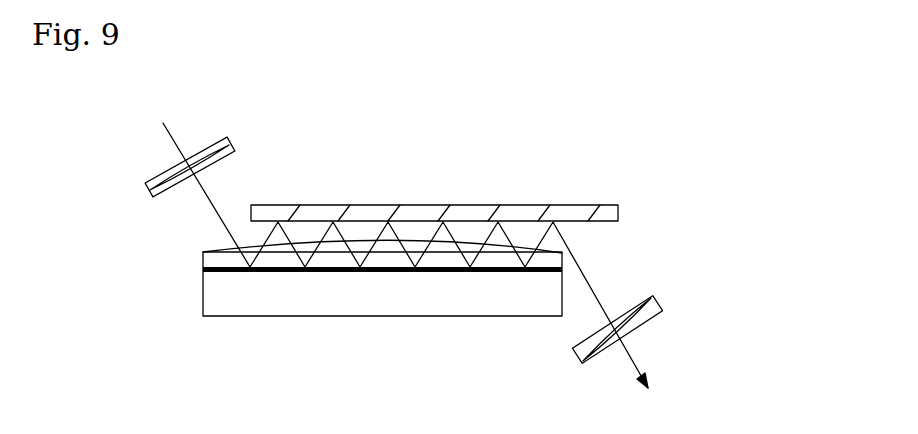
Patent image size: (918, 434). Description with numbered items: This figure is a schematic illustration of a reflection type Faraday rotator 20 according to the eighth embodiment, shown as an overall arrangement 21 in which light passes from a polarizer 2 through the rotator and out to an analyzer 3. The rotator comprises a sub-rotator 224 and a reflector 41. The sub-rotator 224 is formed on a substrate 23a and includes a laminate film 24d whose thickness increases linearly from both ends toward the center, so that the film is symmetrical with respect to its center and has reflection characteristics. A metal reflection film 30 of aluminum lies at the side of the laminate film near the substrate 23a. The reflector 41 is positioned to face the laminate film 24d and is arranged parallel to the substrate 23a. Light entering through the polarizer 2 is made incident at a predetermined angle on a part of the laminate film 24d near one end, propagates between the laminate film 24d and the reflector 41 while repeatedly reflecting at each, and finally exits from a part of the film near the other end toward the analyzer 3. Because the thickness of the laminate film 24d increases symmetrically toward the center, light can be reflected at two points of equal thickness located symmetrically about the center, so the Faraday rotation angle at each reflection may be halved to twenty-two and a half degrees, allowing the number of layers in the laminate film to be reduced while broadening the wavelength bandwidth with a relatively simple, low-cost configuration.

The polarizer 2 is at (128, 184).
The analyzer 3 is at (681, 320).
The reflection type Faraday rotator 20 is at (550, 181).
The liquid crystal display device 21 is at (648, 170).
The substrate 23a is at (222, 300).
The laminate film 24d is at (196, 222).
The metal reflection film 30 is at (562, 270).
The reflector 41 is at (512, 208).
The sub-rotator 224 is at (342, 331).